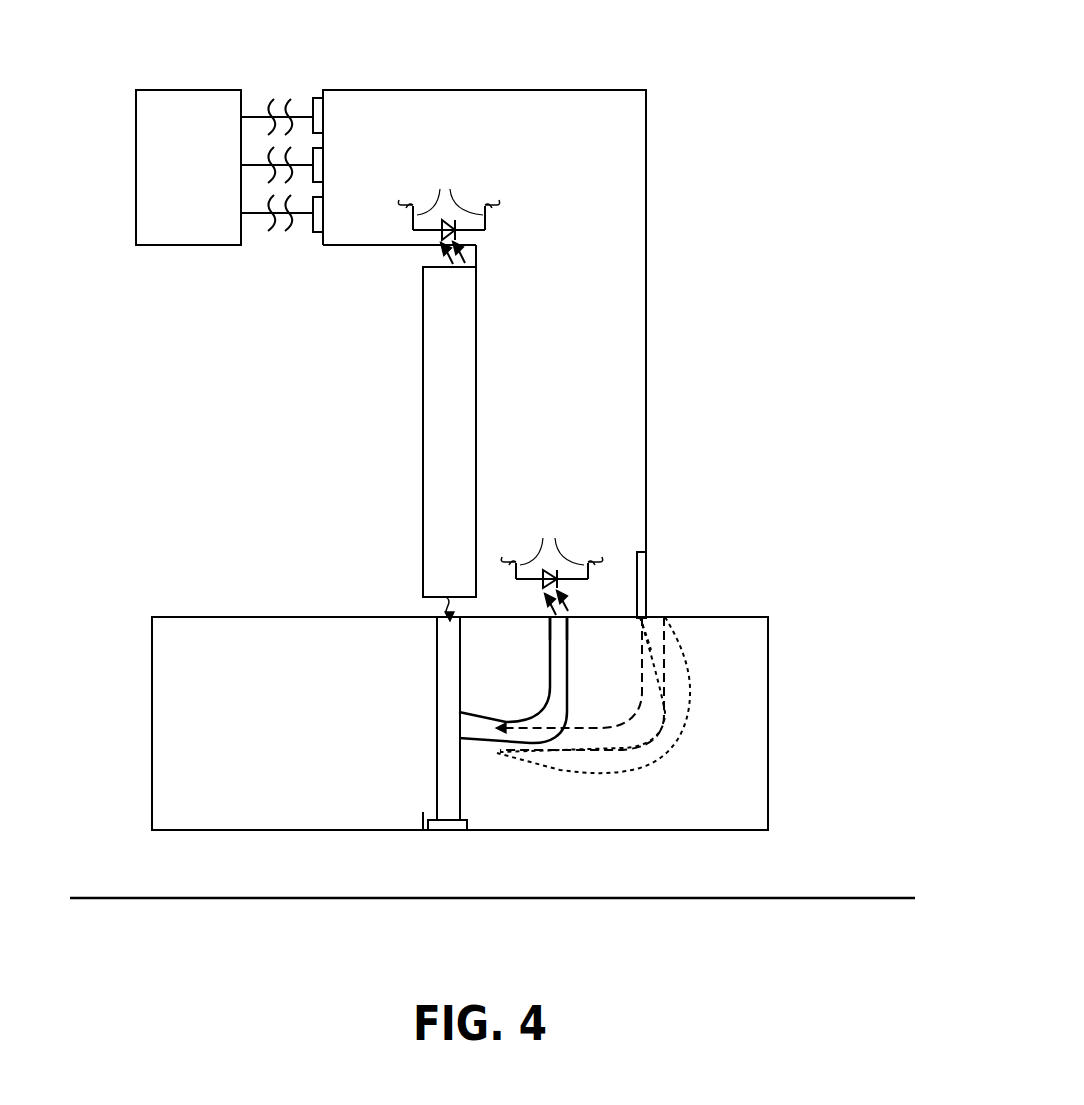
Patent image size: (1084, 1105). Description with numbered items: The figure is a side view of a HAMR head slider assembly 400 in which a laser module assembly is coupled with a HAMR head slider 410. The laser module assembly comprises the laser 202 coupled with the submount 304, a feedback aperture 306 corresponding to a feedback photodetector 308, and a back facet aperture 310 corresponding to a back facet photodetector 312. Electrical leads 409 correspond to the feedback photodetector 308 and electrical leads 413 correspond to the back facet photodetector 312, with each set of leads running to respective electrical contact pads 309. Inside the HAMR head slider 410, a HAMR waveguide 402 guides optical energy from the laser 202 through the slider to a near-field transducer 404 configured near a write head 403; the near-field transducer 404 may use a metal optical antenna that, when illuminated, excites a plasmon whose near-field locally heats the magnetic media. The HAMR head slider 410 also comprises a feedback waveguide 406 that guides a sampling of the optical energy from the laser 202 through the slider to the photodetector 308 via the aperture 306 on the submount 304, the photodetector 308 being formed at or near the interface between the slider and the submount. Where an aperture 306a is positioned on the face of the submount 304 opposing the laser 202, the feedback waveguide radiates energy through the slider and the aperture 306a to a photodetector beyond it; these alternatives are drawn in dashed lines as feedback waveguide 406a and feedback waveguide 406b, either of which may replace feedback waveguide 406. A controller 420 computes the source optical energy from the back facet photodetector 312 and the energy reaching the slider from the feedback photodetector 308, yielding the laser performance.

The HAMR head slider assembly 400 is at (398, 58).
The controller 420 is at (206, 177).
The contact pads 309 is at (313, 200).
The submount 304 is at (595, 186).
The electrical leads 413 is at (450, 189).
The back facet photodetector 312 is at (420, 231).
The back facet aperture 310 is at (443, 245).
The laser 202 is at (433, 415).
The electrical leads 409 is at (551, 562).
The feedback photodetector 308 is at (585, 596).
The aperture 306a is at (640, 599).
The feedback aperture 306 is at (560, 618).
The HAMR head slider 410 is at (743, 656).
The HAMR waveguide 402 is at (443, 658).
The write head 403 is at (422, 821).
The near-field transducer 404 is at (450, 824).
The feedback waveguide 406 is at (548, 700).
The feedback waveguide 406a is at (668, 658).
The feedback waveguide 406b is at (657, 745).